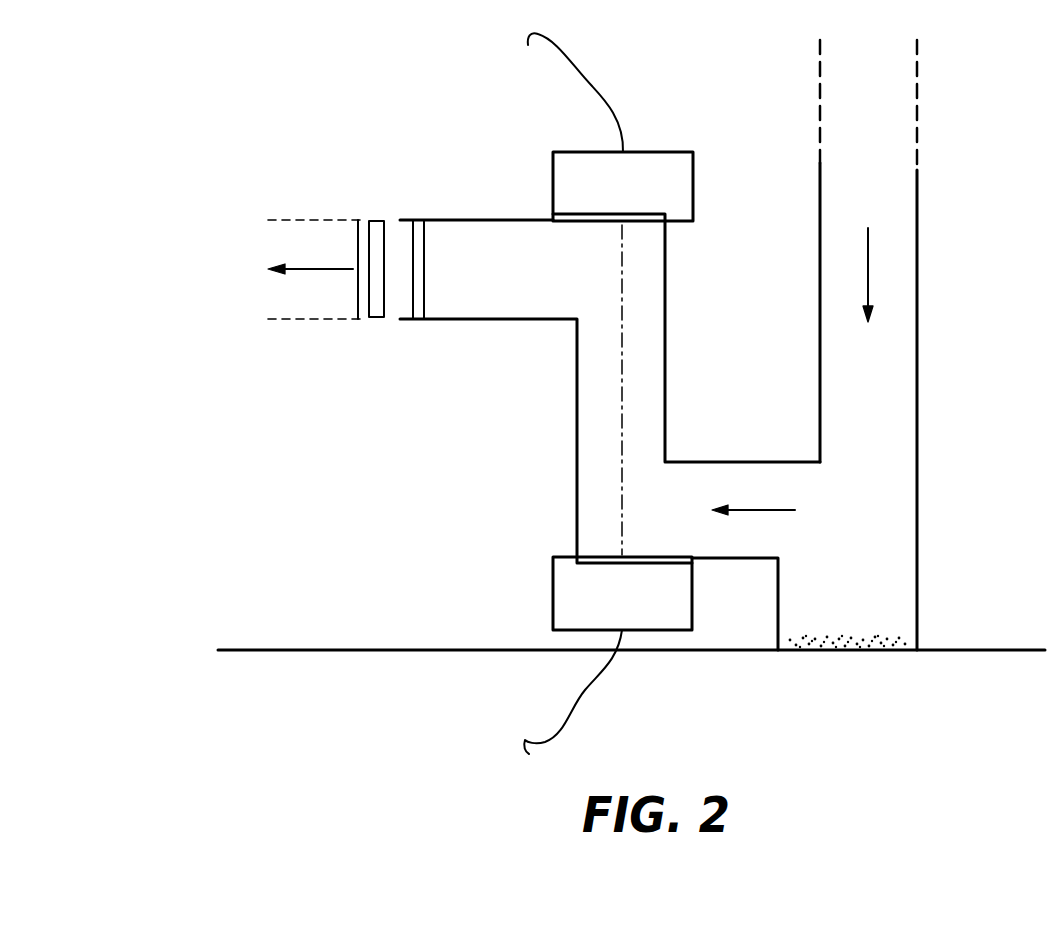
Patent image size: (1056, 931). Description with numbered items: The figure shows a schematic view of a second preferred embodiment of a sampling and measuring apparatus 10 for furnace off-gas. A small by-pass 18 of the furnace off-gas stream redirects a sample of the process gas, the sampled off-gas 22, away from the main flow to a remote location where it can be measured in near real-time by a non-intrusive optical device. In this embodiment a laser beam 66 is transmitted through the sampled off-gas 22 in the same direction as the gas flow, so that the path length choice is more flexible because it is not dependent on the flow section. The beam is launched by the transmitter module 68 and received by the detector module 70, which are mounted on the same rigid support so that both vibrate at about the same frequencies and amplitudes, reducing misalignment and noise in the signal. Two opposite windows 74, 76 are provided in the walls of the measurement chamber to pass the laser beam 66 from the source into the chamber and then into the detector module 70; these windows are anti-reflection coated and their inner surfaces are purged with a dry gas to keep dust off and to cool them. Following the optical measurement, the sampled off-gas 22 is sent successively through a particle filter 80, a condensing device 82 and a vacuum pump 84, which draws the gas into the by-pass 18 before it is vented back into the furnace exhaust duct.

The sampling and measuring apparatus 10 is at (274, 487).
The by-pass 18 is at (890, 257).
The sampled off-gas 22 is at (650, 370).
The laser beam 66 is at (620, 408).
The transmitter module 68 is at (553, 598).
The detector module 70 is at (553, 182).
The window 74 is at (640, 222).
The window 76 is at (662, 557).
The particle filter 80 is at (417, 220).
The condensing device 82 is at (378, 318).
The vacuum pump 84 is at (360, 220).